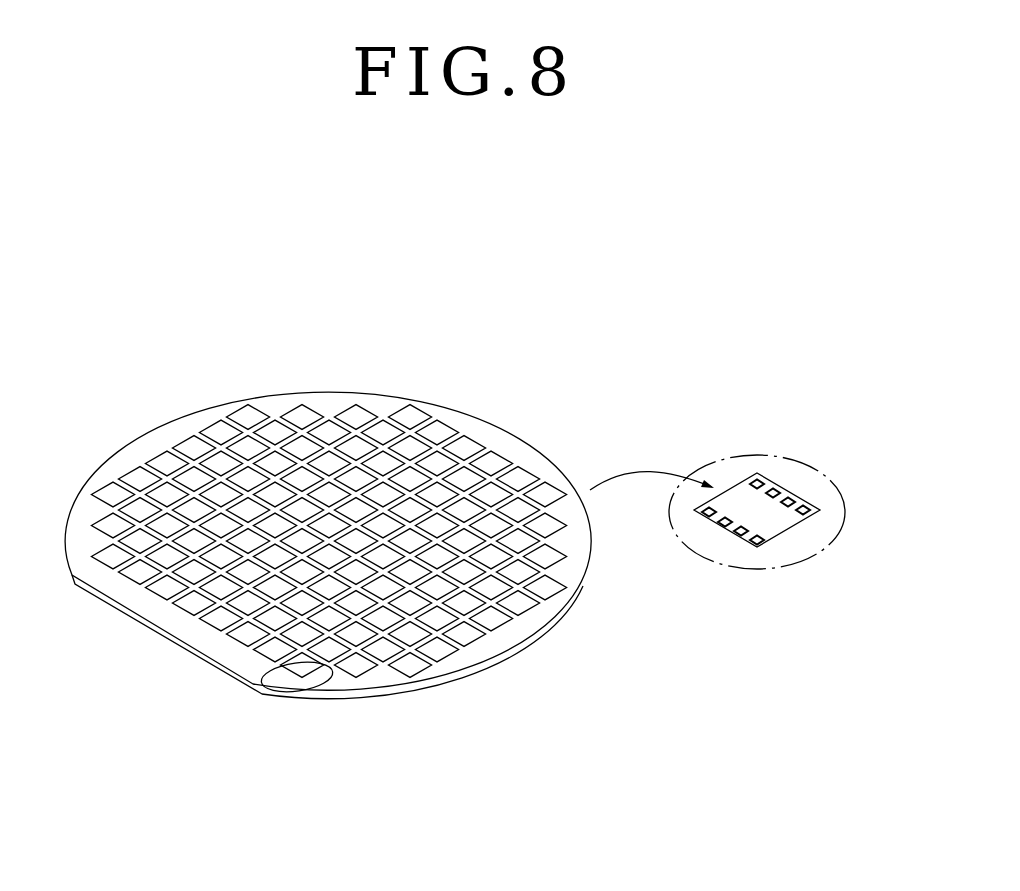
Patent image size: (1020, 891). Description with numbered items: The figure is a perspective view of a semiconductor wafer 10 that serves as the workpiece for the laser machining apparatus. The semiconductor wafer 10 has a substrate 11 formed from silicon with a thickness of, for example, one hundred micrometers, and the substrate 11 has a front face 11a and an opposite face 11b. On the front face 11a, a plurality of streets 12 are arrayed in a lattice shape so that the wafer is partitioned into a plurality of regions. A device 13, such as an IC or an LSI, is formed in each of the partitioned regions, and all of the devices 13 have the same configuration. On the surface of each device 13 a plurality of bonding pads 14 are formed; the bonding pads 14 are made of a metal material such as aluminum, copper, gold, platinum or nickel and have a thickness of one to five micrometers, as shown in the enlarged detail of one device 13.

The semiconductor wafer 10 is at (200, 397).
The substrate 11 is at (535, 641).
The front face 11a is at (493, 440).
The back surface of substrate 11b is at (458, 678).
The streets 12 is at (292, 692).
The device 13 is at (522, 480).
The bonding pads 14 is at (801, 514).